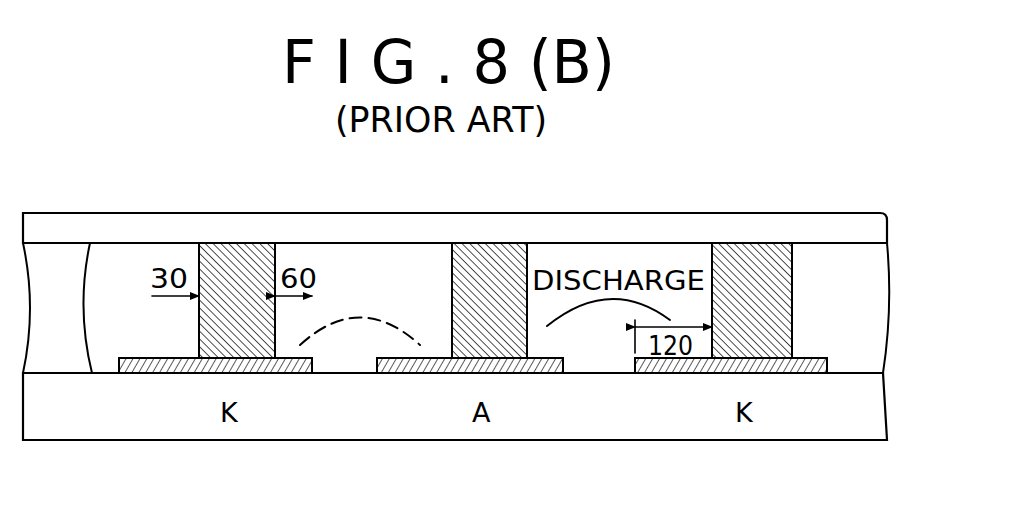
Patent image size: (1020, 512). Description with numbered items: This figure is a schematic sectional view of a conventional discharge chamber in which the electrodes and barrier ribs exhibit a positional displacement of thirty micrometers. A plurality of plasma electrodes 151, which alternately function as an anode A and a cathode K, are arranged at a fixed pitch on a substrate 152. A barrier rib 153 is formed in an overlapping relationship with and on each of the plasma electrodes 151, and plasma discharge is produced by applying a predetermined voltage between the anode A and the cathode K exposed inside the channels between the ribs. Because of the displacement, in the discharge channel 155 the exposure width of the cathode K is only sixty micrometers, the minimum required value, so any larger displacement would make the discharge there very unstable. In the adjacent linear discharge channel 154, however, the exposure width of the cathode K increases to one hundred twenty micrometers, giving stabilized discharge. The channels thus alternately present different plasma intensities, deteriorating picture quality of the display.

The plasma electrode 151 is at (540, 373).
The substrate 152 is at (807, 418).
The barrier rib 153 is at (492, 252).
The linear discharge channel 154 is at (633, 252).
The discharge channel 155 is at (357, 250).